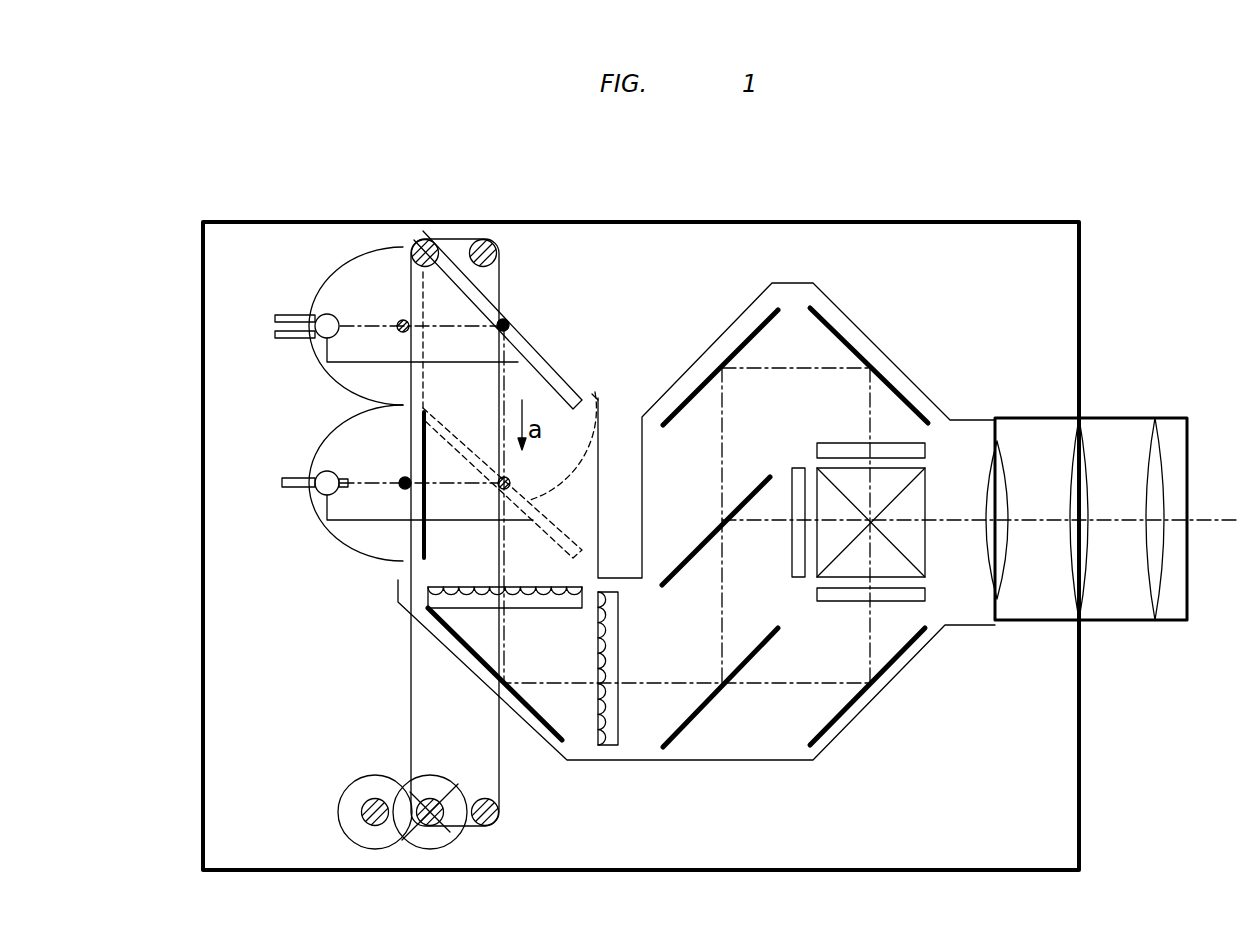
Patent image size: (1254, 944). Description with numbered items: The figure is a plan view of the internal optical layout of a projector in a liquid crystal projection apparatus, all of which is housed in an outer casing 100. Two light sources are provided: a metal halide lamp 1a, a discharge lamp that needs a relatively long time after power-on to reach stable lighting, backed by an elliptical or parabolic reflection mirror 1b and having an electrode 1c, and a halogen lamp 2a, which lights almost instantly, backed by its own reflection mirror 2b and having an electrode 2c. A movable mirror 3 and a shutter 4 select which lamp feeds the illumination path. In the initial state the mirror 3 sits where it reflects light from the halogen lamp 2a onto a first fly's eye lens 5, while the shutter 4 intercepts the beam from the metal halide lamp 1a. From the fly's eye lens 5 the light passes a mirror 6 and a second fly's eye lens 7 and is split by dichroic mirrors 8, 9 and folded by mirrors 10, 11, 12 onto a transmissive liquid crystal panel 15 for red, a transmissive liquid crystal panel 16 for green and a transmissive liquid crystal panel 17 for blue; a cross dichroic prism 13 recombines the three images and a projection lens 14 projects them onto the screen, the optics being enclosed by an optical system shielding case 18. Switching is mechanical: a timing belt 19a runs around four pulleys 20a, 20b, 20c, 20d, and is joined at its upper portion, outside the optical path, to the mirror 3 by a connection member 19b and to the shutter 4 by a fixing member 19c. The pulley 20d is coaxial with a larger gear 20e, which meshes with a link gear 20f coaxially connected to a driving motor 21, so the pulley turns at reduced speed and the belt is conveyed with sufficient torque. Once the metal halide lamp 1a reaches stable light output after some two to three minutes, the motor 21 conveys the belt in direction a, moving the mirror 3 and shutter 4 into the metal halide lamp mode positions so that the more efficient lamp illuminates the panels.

The outer casing 100 is at (1081, 262).
The metal halide lamp 1a is at (323, 497).
The reflection mirror 1b is at (330, 438).
The electrode 1c is at (285, 478).
The halogen lamp 2a is at (325, 316).
The reflection mirror 2b is at (333, 278).
The lead wire 2c is at (275, 337).
The movable mirror 3 is at (532, 365).
The shutter 4 is at (444, 395).
The first fly's eye lens 5 is at (463, 610).
The mirror 6 is at (473, 657).
The second fly's eye lens 7 is at (607, 713).
The dichroic mirror 8 is at (683, 728).
The dichroic mirror 9 is at (697, 540).
The mirror 10 is at (852, 710).
The mirror 11 is at (753, 332).
The mirror 12 is at (857, 350).
The cross dichroic prism 13 is at (927, 490).
The projection lens 14 is at (1045, 418).
The transmissive liquid crystal panel for red color 15 is at (892, 442).
The transmissive liquid crystal panel for green color 16 is at (798, 468).
The transmissive liquid crystal panel for blue color 17 is at (930, 601).
The optical system shielding case 18 is at (793, 283).
The timing belt 19a is at (500, 783).
The connection member 19b is at (512, 320).
The fixing member 19c is at (400, 490).
The timing belt driving pulley 20a is at (423, 240).
The timing belt driving pulley 20b is at (490, 240).
The timing belt driving pulley 20c is at (486, 826).
The timing belt driving pulley 20d is at (430, 826).
The gear 20e is at (412, 777).
The link gear 20f is at (366, 823).
The driving motor 21 is at (338, 805).